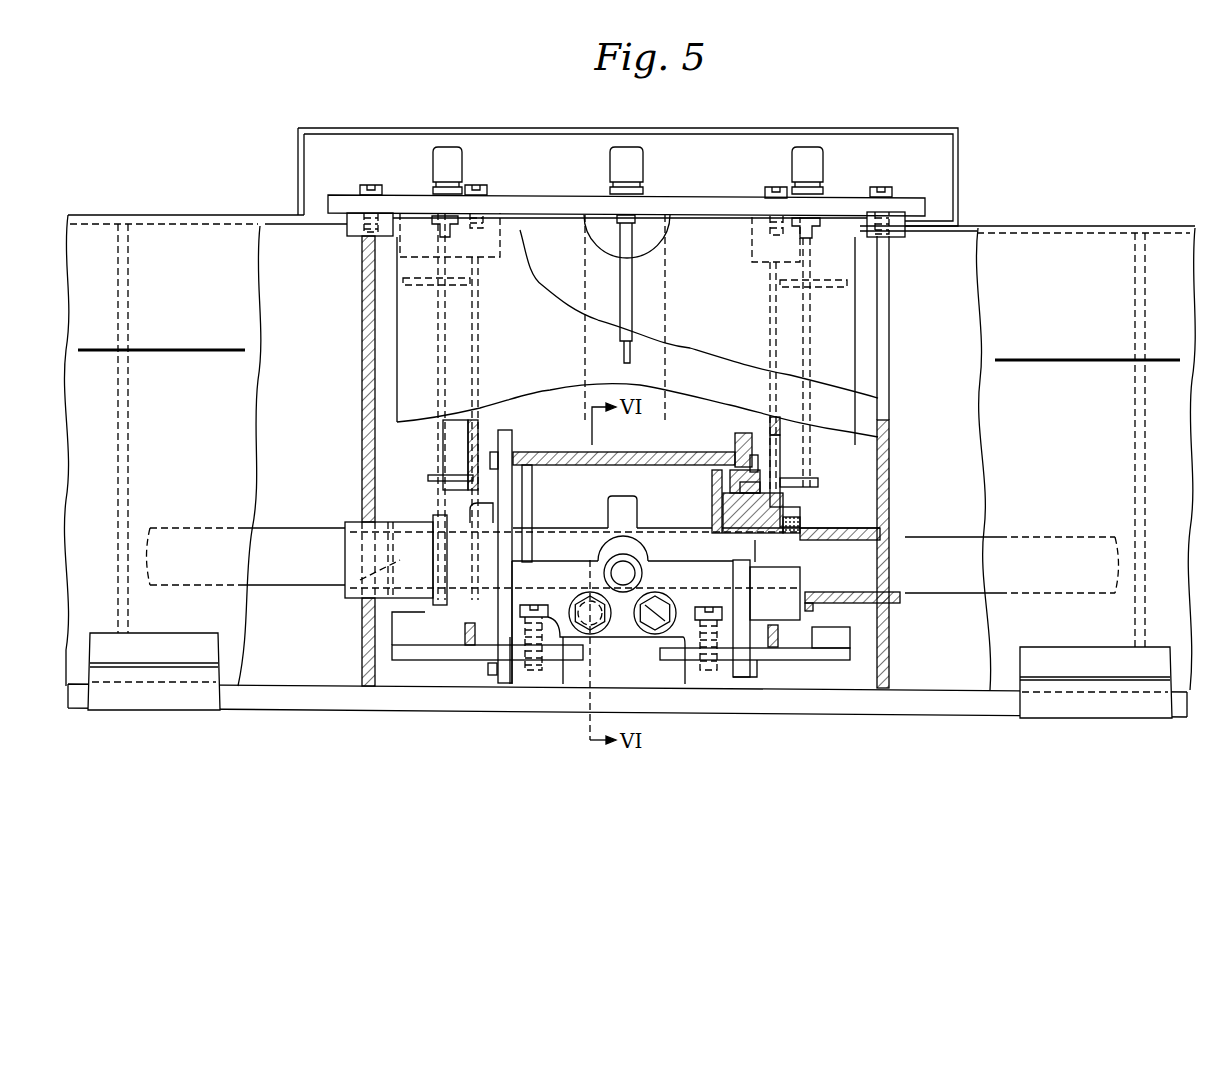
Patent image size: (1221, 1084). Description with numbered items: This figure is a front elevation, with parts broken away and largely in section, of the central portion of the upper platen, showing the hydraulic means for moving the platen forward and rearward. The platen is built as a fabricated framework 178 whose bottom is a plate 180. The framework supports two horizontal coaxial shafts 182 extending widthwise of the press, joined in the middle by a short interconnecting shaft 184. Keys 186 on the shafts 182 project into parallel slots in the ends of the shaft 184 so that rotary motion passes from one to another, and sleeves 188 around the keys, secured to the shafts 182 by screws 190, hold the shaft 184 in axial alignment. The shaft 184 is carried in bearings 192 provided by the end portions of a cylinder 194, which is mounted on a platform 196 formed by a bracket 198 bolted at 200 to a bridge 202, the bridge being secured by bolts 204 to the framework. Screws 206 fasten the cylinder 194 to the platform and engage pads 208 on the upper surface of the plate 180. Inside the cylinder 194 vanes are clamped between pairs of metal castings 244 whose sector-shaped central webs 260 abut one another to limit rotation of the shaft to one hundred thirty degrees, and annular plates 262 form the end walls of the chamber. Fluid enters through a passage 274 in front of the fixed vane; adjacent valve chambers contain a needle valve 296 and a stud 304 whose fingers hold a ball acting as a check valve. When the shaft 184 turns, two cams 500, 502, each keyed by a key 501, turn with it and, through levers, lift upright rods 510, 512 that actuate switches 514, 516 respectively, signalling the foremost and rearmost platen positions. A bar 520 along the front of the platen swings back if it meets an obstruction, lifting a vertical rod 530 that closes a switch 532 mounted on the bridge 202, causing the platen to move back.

The fabricated framework 178 is at (166, 414).
The plate 180 is at (542, 708).
The horizontal coaxial shafts 182 is at (282, 585).
The interconnecting shaft 184 is at (790, 558).
The keys 186 is at (420, 535).
The sleeves 188 is at (352, 538).
The screws 190 is at (890, 527).
The bearings 192 is at (508, 432).
The cylinder 194 is at (646, 460).
The platform 196 is at (425, 656).
The bracket 198 is at (462, 444).
The bolts 200 is at (488, 186).
The bridge 202 is at (553, 205).
The bolts 204 is at (362, 186).
The screws 206 is at (540, 606).
The pads 208 is at (758, 676).
The metal castings 244 is at (582, 527).
The sector-shaped central webs 260 is at (624, 498).
The annular plates 262 is at (532, 488).
The passage 274 is at (611, 570).
The needle valve 296 is at (652, 634).
The stud 304 is at (597, 634).
The cam 500 is at (445, 622).
The key 501 is at (392, 598).
The cam 502 is at (820, 622).
The upright rod 510 is at (432, 465).
The upright rod 512 is at (810, 440).
The switch 514 is at (470, 150).
The switch 516 is at (806, 152).
The bar 520 is at (135, 710).
The vertical rod 530 is at (622, 345).
The switch 532 is at (626, 150).